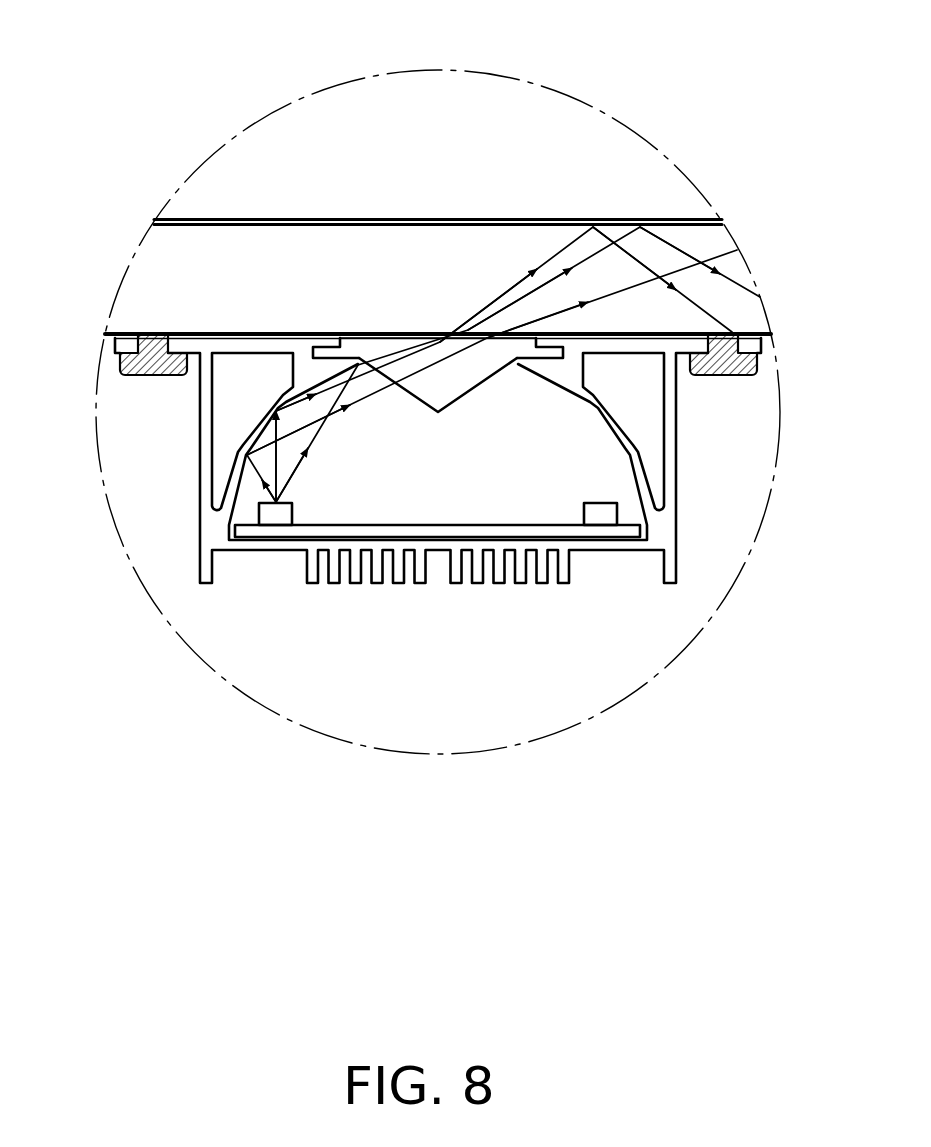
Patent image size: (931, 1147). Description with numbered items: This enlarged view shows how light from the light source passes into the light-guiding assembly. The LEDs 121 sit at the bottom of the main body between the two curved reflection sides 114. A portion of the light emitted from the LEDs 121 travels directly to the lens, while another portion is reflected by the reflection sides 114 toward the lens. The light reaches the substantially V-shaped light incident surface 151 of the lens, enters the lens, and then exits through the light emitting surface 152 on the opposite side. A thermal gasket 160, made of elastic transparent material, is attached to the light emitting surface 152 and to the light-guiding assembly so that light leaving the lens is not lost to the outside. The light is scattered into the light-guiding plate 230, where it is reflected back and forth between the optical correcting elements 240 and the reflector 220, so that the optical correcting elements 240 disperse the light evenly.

The reflection side 114 is at (615, 428).
The LED 121 is at (601, 514).
The light incident surface 151 is at (486, 368).
The light emitting surface 152 is at (410, 336).
The thermal gasket 160 is at (362, 331).
The reflector 220 is at (128, 333).
The light-guiding plate 230 is at (160, 278).
The optical correcting elements 240 is at (192, 217).